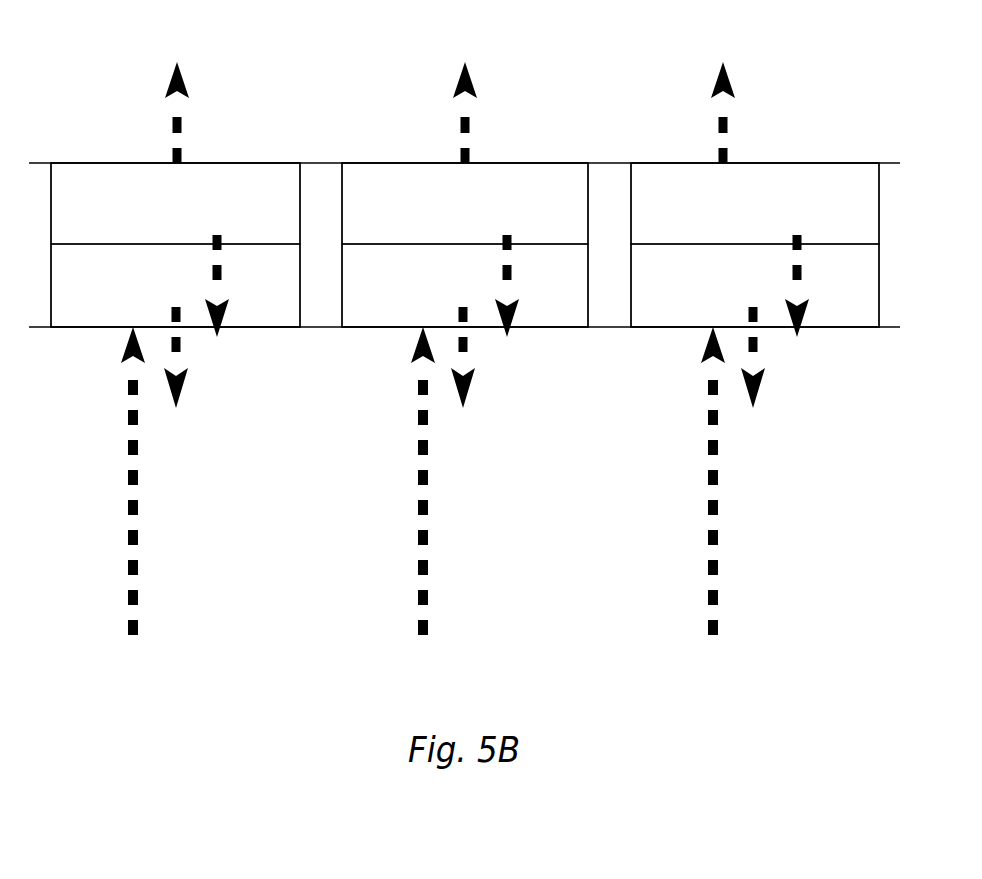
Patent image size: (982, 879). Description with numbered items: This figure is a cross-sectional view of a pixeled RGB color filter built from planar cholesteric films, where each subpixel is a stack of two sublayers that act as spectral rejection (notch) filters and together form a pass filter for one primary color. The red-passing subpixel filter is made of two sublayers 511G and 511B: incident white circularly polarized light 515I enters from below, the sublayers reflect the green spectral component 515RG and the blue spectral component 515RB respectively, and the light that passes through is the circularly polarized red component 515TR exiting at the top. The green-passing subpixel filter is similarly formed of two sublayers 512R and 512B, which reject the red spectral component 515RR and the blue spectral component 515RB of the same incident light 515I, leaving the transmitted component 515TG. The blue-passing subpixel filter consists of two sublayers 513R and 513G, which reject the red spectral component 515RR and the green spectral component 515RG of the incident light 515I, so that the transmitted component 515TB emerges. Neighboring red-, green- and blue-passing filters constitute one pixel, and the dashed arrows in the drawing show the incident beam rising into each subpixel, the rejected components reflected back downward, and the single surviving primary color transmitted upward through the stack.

The blue-rejecting sublayer of red-passing subpixel filter 511B is at (142, 207).
The green-rejecting sublayer of red-passing subpixel filter 511G is at (142, 290).
The blue-rejecting sublayer of green-passing subpixel filter 512B is at (432, 207).
The red-rejecting sublayer of green-passing subpixel filter 512R is at (432, 290).
The green-rejecting sublayer of blue-passing subpixel filter 513G is at (723, 207).
The red-rejecting sublayer of blue-passing subpixel filter 513R is at (723, 290).
The transmitted circularly polarized red component 515TR is at (197, 90).
The transmitted circularly polarized green component 515TG is at (487, 90).
The transmitted circularly polarized blue component 515TB is at (744, 90).
The rejected blue spectral component 515RB is at (401, 305).
The rejected green spectral component 515RG is at (528, 340).
The rejected red spectral component 515RR is at (650, 376).
The incident white circularly polarized light 515I is at (455, 501).